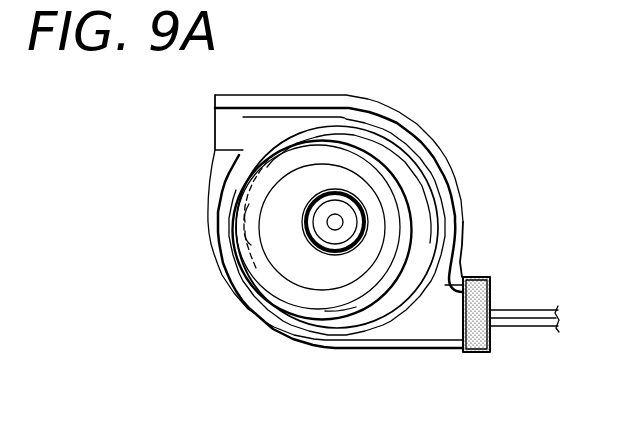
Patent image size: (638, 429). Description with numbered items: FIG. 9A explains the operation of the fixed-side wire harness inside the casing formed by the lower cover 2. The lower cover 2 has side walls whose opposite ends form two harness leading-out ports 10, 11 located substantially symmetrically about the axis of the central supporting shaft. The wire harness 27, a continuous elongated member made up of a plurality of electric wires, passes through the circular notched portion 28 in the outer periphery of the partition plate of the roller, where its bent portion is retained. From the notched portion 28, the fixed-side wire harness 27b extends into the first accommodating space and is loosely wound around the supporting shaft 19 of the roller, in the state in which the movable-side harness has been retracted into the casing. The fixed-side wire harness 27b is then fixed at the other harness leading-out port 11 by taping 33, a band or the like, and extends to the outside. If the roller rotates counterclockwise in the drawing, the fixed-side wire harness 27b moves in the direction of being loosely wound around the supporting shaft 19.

The lower cover 2 is at (425, 119).
The harness leading-out port 10 is at (226, 111).
The harness leading-out port 11 is at (495, 330).
The supporting shaft 19 is at (335, 250).
The wire harness 27 is at (347, 110).
The fixed-side wire harness 27b is at (431, 204).
The notched portion 28 is at (265, 242).
The taping 33 is at (490, 300).